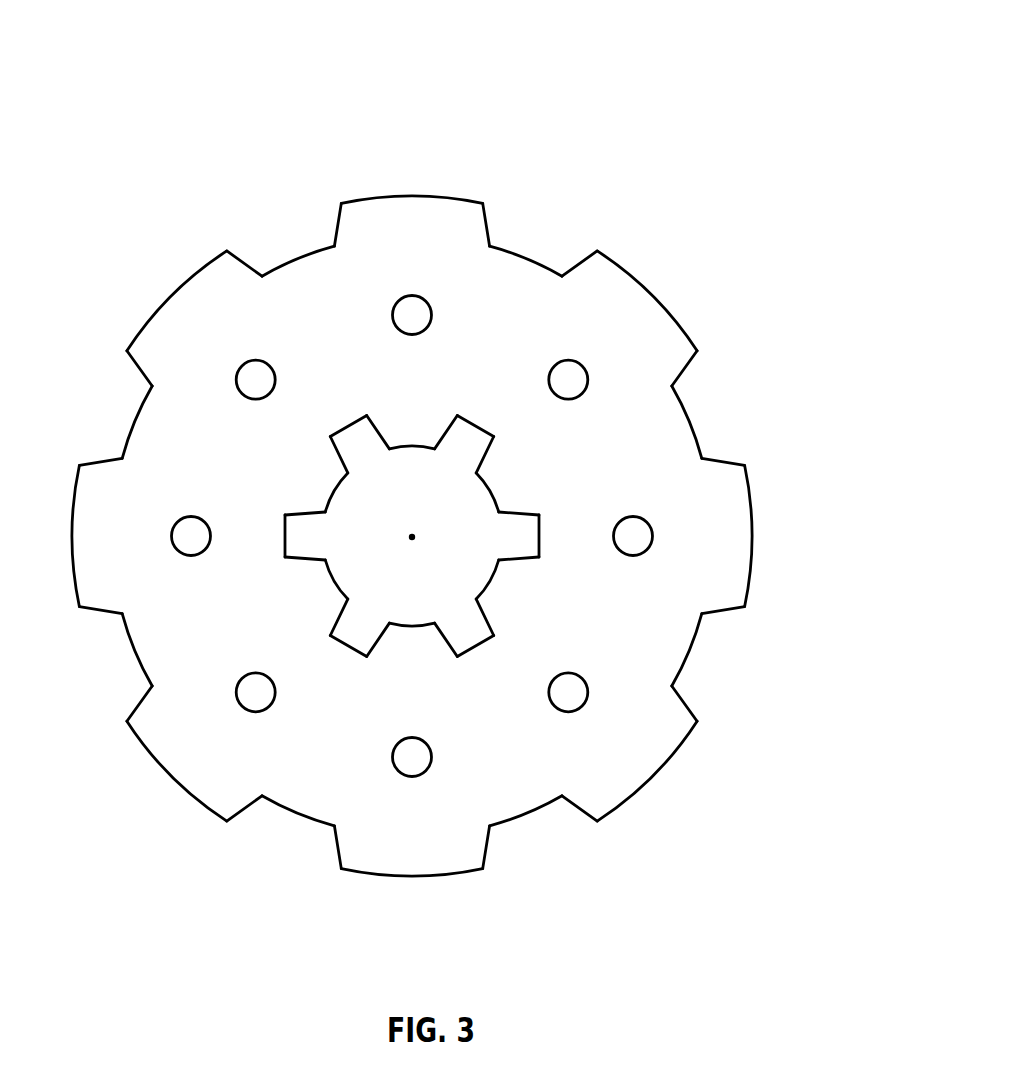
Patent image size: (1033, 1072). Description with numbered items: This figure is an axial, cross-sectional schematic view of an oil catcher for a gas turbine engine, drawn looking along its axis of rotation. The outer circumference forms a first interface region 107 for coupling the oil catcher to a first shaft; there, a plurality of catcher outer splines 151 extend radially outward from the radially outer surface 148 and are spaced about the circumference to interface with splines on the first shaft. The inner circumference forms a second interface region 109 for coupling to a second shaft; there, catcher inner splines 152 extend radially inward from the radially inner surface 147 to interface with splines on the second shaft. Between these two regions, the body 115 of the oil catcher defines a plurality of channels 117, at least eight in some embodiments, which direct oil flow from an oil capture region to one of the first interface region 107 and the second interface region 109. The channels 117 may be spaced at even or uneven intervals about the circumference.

The first interface region 107 is at (449, 474).
The second interface region 109 is at (304, 630).
The body 115 is at (667, 632).
The channels 117 is at (643, 537).
The radially inner surface 147 is at (350, 650).
The radially outer surface 148 is at (133, 652).
The catcher outer splines 151 is at (724, 386).
The catcher inner splines 152 is at (480, 575).